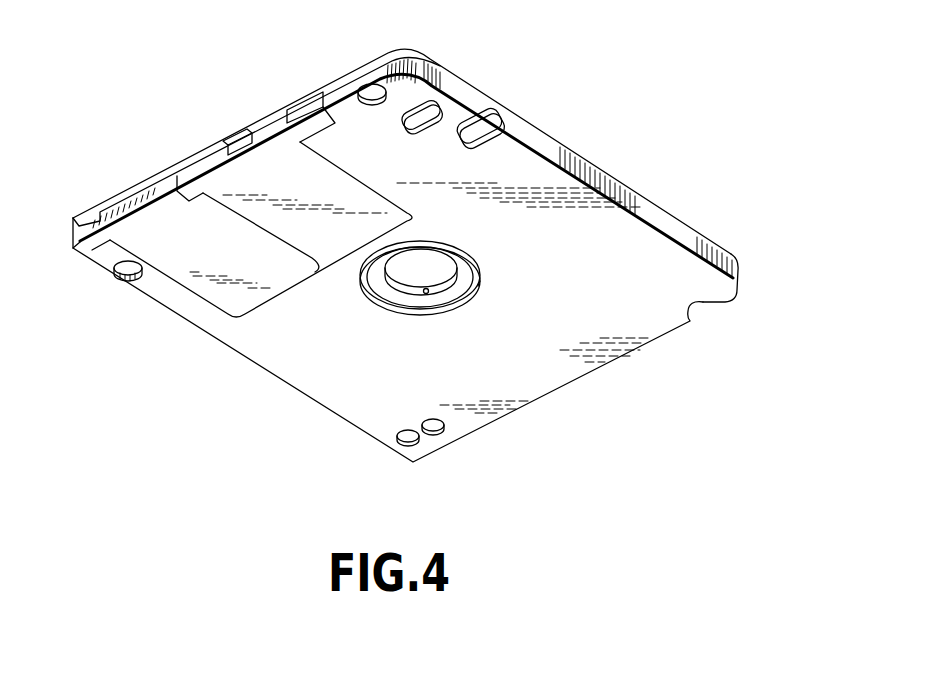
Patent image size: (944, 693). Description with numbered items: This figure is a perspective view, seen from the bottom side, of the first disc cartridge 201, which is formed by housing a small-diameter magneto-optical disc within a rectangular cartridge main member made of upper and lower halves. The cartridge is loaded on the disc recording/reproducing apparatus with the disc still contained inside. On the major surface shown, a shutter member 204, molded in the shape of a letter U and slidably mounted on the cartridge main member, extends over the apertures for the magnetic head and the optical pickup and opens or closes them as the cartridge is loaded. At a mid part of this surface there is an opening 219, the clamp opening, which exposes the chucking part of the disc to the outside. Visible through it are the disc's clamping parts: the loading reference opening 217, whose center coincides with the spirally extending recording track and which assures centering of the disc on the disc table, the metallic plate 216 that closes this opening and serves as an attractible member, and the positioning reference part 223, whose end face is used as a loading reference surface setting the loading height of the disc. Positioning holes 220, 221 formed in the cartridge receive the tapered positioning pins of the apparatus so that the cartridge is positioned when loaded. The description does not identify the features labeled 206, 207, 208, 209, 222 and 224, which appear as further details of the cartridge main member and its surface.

The first disc cartridge 201 is at (623, 113).
The shutter member 204 is at (217, 181).
The side wall 206 is at (333, 82).
The projection 207 is at (242, 136).
The slot 208 is at (300, 108).
The boss 209 is at (480, 127).
The metallic plate 216 is at (403, 272).
The loading reference opening 217 is at (422, 293).
The opening (clamp opening) 219 is at (474, 290).
The positioning hole 220 is at (433, 103).
The positioning hole 221 is at (121, 281).
The bosses 222 is at (434, 441).
The positioning reference part 223 is at (373, 283).
The corner portion 224 is at (738, 263).